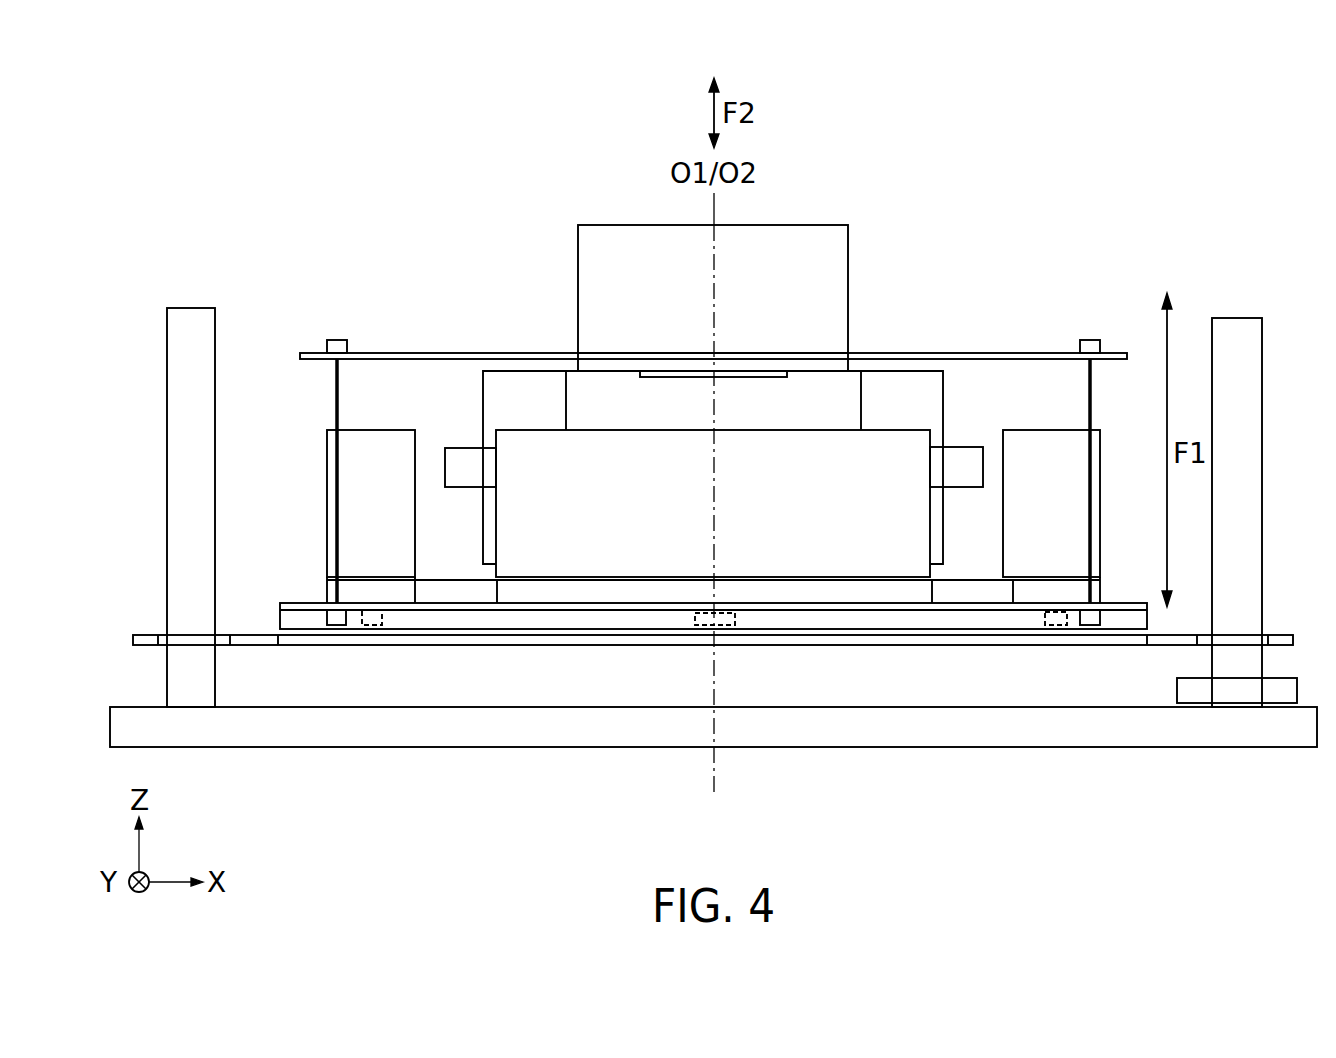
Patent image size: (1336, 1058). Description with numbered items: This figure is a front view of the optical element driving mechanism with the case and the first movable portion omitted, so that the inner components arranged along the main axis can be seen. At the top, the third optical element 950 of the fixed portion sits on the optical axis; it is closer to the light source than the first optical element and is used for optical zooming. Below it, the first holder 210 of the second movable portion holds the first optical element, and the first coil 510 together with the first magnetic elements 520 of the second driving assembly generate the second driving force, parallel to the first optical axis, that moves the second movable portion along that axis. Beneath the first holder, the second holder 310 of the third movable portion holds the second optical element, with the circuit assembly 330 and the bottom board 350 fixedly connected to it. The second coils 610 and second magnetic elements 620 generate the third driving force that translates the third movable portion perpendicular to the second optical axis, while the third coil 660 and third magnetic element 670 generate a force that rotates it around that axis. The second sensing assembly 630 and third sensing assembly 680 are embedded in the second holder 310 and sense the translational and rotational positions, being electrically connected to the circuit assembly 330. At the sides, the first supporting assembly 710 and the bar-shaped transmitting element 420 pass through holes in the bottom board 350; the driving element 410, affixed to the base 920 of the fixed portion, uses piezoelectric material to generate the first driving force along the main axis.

The first holder 210 is at (897, 395).
The second holder 310 is at (288, 620).
The circuit assembly 330 is at (296, 605).
The bottom board 350 is at (252, 645).
The driving element 410 is at (1197, 693).
The transmitting element 420 is at (1236, 328).
The first coil 510 is at (463, 452).
The first magnetic element 520 is at (715, 417).
The second coil 610 is at (622, 593).
The second magnetic element 620 is at (532, 458).
The second sensing assembly 630 is at (725, 630).
The third coil 660 is at (393, 592).
The third magnetic element 670 is at (368, 455).
The third sensing assembly 680 is at (378, 628).
The first supporting assembly 710 is at (188, 318).
The base 920 is at (873, 747).
The third optical element 950 is at (836, 268).